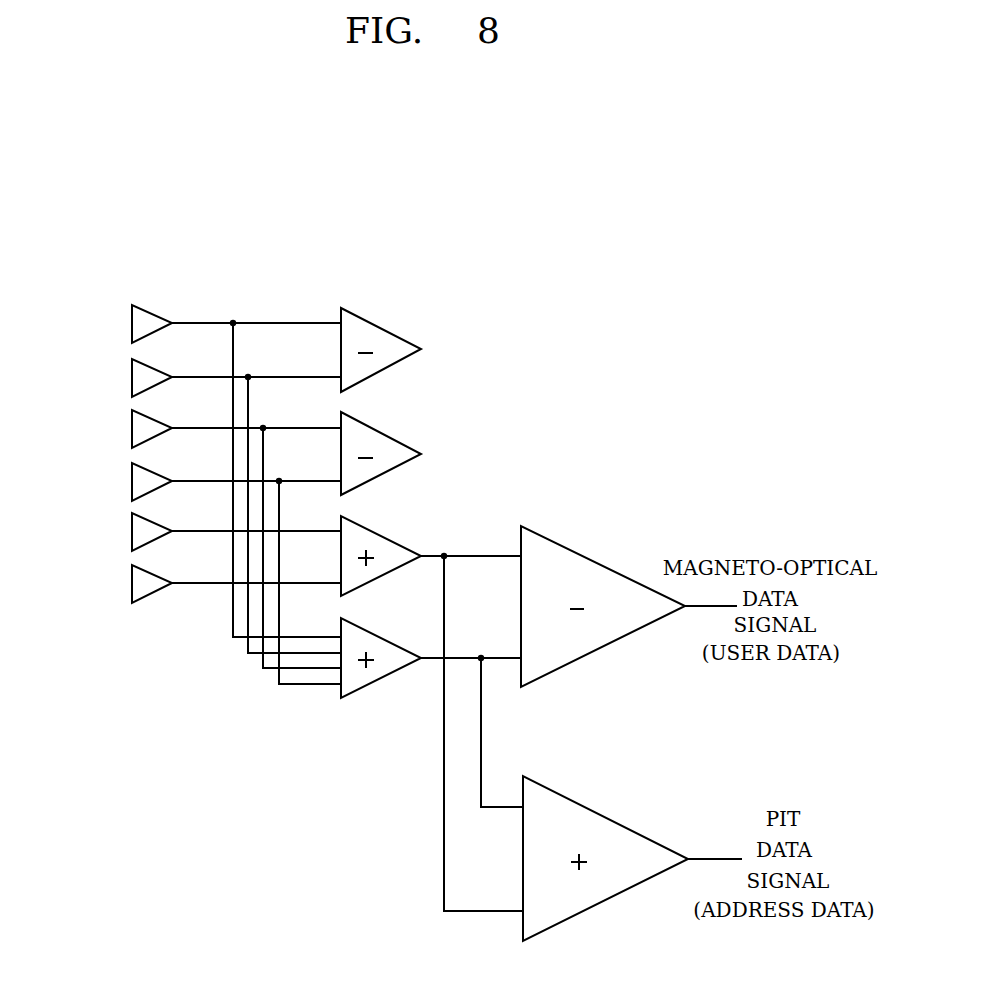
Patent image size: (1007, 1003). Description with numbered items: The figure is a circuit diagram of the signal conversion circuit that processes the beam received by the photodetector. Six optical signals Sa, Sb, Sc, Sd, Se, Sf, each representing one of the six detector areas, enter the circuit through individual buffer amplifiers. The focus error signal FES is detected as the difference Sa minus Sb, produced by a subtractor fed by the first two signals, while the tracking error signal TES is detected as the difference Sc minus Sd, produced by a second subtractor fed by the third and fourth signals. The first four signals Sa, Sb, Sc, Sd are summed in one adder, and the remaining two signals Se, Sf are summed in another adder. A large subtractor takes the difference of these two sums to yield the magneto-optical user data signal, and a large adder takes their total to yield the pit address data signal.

The optical signal Sa is at (132, 323).
The optical signal Sb is at (132, 377).
The optical signal Sc is at (132, 428).
The optical signal Sd is at (132, 481).
The optical signal Se is at (132, 531).
The optical signal Sf is at (132, 583).
The focus error signal FES is at (421, 349).
The tracking error signal TES is at (421, 454).